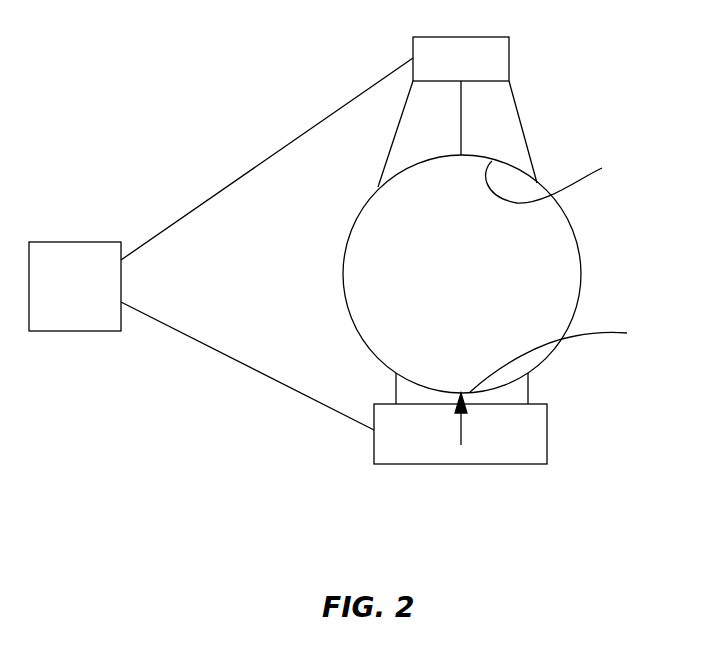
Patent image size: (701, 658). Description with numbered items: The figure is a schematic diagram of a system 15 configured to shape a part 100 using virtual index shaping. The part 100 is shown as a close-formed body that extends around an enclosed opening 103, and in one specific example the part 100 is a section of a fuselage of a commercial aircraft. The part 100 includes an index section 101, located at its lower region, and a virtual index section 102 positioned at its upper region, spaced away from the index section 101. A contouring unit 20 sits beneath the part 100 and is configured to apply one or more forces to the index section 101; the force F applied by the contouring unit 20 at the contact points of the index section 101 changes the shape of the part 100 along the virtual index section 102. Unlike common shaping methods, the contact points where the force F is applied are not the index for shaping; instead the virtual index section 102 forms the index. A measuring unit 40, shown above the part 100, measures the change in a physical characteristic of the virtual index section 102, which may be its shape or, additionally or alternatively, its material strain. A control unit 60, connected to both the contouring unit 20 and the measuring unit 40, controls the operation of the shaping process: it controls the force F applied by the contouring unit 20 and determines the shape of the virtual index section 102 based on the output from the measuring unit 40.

The system 15 is at (190, 120).
The measuring unit 40 is at (449, 68).
The control unit 60 is at (61, 295).
The contouring unit 20 is at (399, 448).
The part 100 is at (580, 268).
The enclosed opening 103 is at (445, 286).
The virtual index section 102 is at (566, 179).
The index section 101 is at (571, 358).
The force F is at (462, 435).